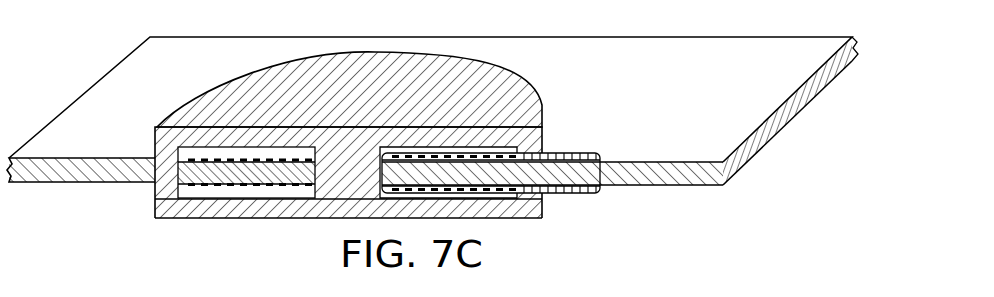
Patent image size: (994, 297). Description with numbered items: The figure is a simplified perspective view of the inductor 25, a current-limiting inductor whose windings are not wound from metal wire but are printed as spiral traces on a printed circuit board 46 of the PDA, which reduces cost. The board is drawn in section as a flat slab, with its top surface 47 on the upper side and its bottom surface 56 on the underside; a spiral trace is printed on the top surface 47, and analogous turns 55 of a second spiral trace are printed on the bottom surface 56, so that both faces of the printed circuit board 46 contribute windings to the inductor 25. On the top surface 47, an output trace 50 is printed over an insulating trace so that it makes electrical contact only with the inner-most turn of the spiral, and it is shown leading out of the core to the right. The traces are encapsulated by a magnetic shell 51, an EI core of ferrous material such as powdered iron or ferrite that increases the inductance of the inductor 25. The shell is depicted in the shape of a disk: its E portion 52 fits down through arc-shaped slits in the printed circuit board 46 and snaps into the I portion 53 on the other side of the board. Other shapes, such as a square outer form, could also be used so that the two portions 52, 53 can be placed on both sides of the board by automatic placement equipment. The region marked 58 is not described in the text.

The inductor 25 is at (576, 66).
The printed circuit board 46 is at (126, 180).
The top surface 47 is at (749, 48).
The output trace 50 is at (584, 153).
The magnetic shell 51 is at (473, 63).
The E portion 52 is at (155, 139).
The I portion 53 is at (155, 205).
The turns 55 is at (230, 159).
The bottom surface 56 is at (646, 192).
The gap 58 is at (192, 148).